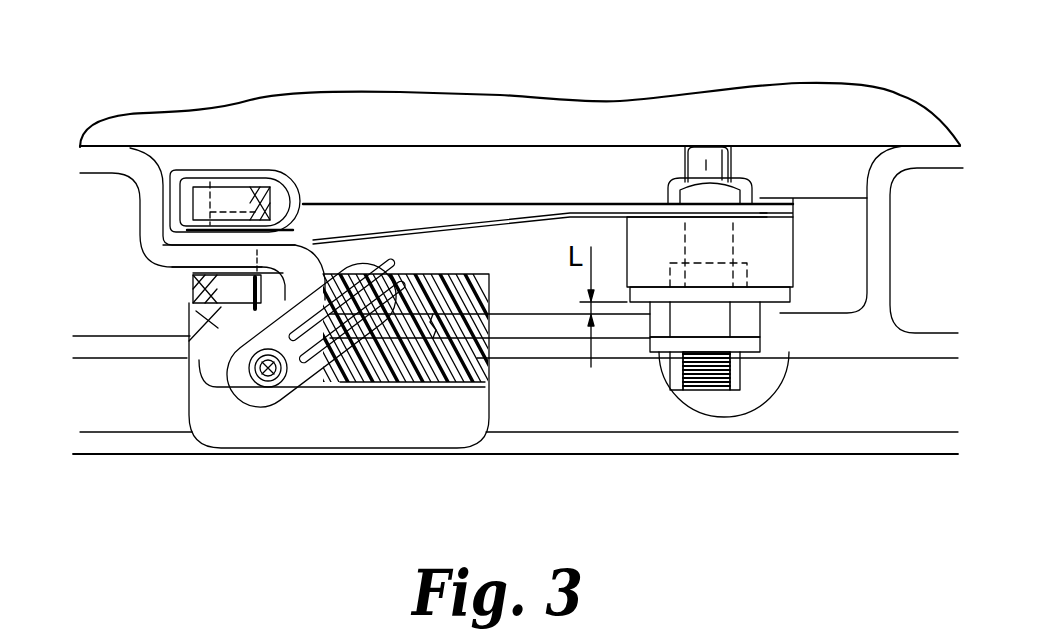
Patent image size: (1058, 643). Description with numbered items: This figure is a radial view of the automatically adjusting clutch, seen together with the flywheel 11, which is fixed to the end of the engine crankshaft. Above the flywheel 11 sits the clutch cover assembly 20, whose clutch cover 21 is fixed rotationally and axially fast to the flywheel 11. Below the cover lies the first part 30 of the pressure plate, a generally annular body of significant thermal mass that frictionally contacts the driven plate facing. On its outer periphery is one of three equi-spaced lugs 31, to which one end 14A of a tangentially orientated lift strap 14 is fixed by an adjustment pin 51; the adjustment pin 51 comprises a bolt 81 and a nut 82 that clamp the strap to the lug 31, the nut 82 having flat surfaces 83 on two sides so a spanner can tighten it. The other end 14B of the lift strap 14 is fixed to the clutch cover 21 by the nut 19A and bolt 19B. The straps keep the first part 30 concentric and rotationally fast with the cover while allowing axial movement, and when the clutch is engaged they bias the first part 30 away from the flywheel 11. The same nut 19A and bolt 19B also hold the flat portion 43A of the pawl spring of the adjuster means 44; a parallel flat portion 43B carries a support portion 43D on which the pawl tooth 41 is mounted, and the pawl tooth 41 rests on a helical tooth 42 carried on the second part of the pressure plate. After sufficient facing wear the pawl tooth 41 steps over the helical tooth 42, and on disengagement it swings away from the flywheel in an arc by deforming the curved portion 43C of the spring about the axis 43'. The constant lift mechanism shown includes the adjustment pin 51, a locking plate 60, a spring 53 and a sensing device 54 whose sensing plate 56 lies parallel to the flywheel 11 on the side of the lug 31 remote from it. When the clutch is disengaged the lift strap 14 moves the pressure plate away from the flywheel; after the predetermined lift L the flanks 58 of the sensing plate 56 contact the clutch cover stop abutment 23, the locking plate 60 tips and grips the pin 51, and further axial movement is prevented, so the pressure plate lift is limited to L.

The flywheel 11 is at (398, 136).
The lift strap 14 is at (513, 204).
The end of lift strap 14A is at (601, 206).
The other end of lift strap 14B is at (302, 243).
The nut 19A is at (201, 190).
The bolt 19B is at (190, 289).
The clutch cover assembly 20 is at (114, 448).
The clutch cover 21 is at (161, 443).
The clutch cover stop abutment 23 is at (647, 303).
The first part of pressure plate 30 is at (512, 252).
The lug 31 is at (765, 207).
The pawl tooth 41 is at (375, 347).
The helical tooth 42 is at (403, 390).
The axis 43' is at (313, 158).
The flat portion of spring 43A is at (140, 244).
The parallel flat portion of spring 43B is at (216, 178).
The curved portion of spring 43C is at (296, 200).
The support portion 43D is at (184, 363).
The adjuster means 44 is at (337, 390).
The adjustment pin 51 is at (726, 390).
The spring 53 is at (665, 325).
The sensing device 54 is at (697, 143).
The sensing plate 56 is at (775, 272).
The flanks of sensing plate 58 is at (893, 277).
The locking plate 60 is at (777, 360).
The bolt 81 is at (741, 187).
The nut 82 is at (667, 385).
The flat surfaces 83 is at (693, 392).